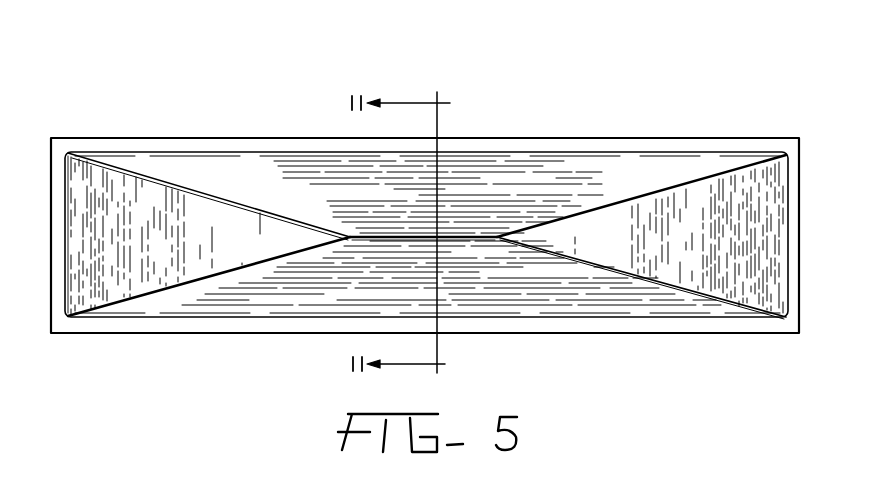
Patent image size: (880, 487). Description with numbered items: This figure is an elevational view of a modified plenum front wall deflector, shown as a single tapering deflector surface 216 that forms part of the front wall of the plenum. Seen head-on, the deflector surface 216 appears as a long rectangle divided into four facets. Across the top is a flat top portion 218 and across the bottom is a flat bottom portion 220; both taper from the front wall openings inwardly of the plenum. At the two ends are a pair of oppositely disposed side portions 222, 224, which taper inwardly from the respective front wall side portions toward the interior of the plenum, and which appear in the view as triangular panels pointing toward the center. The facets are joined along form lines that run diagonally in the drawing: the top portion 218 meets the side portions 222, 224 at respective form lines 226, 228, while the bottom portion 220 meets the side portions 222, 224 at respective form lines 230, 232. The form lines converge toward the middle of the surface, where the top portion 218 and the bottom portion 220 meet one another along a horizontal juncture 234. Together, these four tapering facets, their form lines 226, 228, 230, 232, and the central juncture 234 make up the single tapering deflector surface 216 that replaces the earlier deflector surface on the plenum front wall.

The single tapering deflector surface 216 is at (539, 123).
The flat top portion 218 is at (173, 164).
The flat bottom portion 220 is at (240, 300).
The side portion 222 is at (123, 283).
The side portion 224 is at (703, 197).
The form line 226 is at (233, 201).
The form line 228 is at (603, 208).
The form line 230 is at (273, 263).
The form line 232 is at (549, 253).
The juncture 234 is at (472, 238).